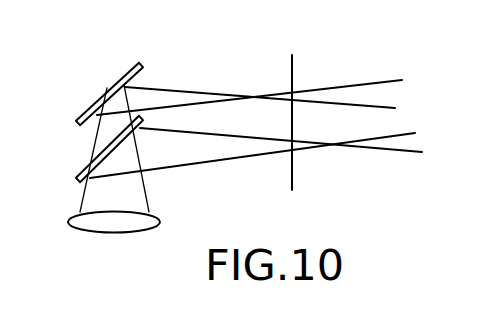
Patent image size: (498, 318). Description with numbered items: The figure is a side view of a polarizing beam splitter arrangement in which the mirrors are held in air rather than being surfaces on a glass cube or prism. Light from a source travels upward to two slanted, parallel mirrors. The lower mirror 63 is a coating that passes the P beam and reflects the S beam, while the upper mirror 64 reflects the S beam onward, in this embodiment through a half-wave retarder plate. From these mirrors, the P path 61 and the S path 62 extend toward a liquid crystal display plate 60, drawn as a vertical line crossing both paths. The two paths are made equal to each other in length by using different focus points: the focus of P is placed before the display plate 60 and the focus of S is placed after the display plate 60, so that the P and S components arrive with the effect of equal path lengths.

The LCD plate 60 is at (293, 72).
The P path 61 is at (208, 91).
The S path 62 is at (190, 166).
The mirror 63 is at (77, 176).
The mirror 64 is at (120, 87).